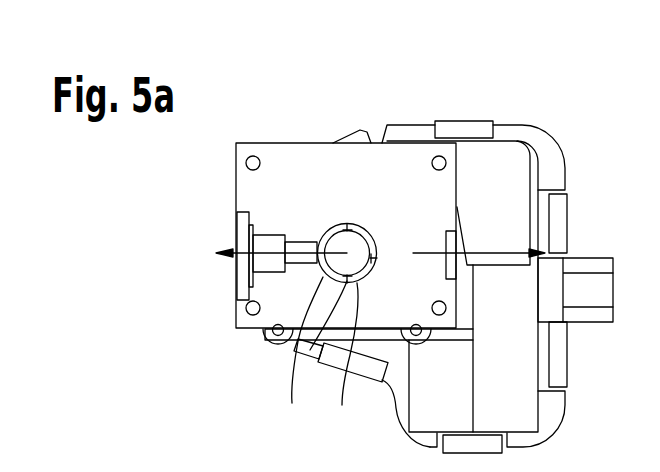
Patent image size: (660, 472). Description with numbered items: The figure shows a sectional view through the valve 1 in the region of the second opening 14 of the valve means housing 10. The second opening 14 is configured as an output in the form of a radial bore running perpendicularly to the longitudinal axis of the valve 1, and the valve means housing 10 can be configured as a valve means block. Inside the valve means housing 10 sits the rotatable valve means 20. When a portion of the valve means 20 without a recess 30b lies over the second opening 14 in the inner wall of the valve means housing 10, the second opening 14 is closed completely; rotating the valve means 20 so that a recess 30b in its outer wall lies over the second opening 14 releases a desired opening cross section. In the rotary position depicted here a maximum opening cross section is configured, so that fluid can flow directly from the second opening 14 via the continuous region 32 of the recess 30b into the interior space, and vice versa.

The valve 1 is at (178, 359).
The valve means housing 10 is at (258, 183).
The second opening 14 is at (258, 270).
The recess 30b is at (285, 243).
The continuous region 32 is at (300, 360).
The valve means 20 is at (342, 363).